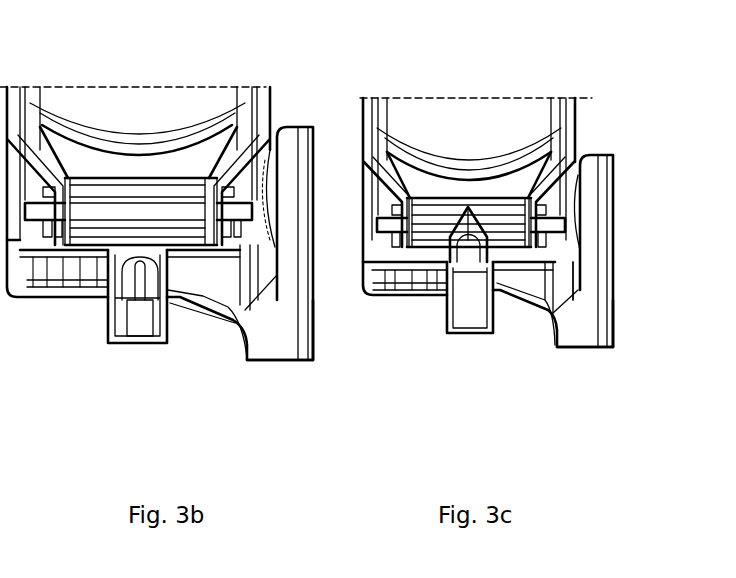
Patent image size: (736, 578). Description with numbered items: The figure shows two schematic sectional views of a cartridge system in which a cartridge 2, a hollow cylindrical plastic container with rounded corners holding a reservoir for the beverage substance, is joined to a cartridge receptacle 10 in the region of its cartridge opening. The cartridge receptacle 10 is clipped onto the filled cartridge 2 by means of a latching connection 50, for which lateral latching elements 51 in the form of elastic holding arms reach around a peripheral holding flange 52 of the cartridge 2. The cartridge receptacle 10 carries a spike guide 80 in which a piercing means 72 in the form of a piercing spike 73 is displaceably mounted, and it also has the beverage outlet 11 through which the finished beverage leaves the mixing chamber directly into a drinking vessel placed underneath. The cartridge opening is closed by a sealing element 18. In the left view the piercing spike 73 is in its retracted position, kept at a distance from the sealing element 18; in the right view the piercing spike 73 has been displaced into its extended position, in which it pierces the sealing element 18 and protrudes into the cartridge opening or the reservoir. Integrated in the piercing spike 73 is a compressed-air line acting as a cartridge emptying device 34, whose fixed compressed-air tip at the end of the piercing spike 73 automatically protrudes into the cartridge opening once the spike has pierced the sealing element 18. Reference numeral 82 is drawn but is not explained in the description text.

In FIG. 3b, the cartridge 2 is at (205, 57).
In FIG. 3c, the cartridge 2 is at (467, 128).
In FIG. 3b, the cartridge receptacle 10 is at (228, 323).
In FIG. 3c, the cartridge receptacle 10 is at (553, 310).
In FIG. 3b, the beverage outlet 11 is at (270, 350).
In FIG. 3c, the beverage outlet 11 is at (613, 342).
In FIG. 3b, the sealing element 18 is at (95, 255).
In FIG. 3c, the sealing element 18 is at (404, 290).
In FIG. 3c, the cartridge emptying device 34 is at (464, 207).
In FIG. 3b, the latching connection 50 is at (293, 125).
In FIG. 3c, the latching element 51 is at (583, 198).
In FIG. 3b, the holding flange 52 is at (42, 163).
In FIG. 3c, the holding flange 52 is at (362, 250).
In FIG. 3b, the piercing means 72 is at (110, 305).
In FIG. 3c, the piercing means 72 is at (572, 158).
In FIG. 3b, the piercing spike 73 is at (234, 220).
In FIG. 3c, the piercing spike 73 is at (548, 232).
In FIG. 3b, the spike guide 80 is at (168, 315).
In FIG. 3c, the spike guide 80 is at (507, 300).
In FIG. 3b, the housing wall 82 is at (183, 302).
In FIG. 3c, the housing wall 82 is at (584, 233).